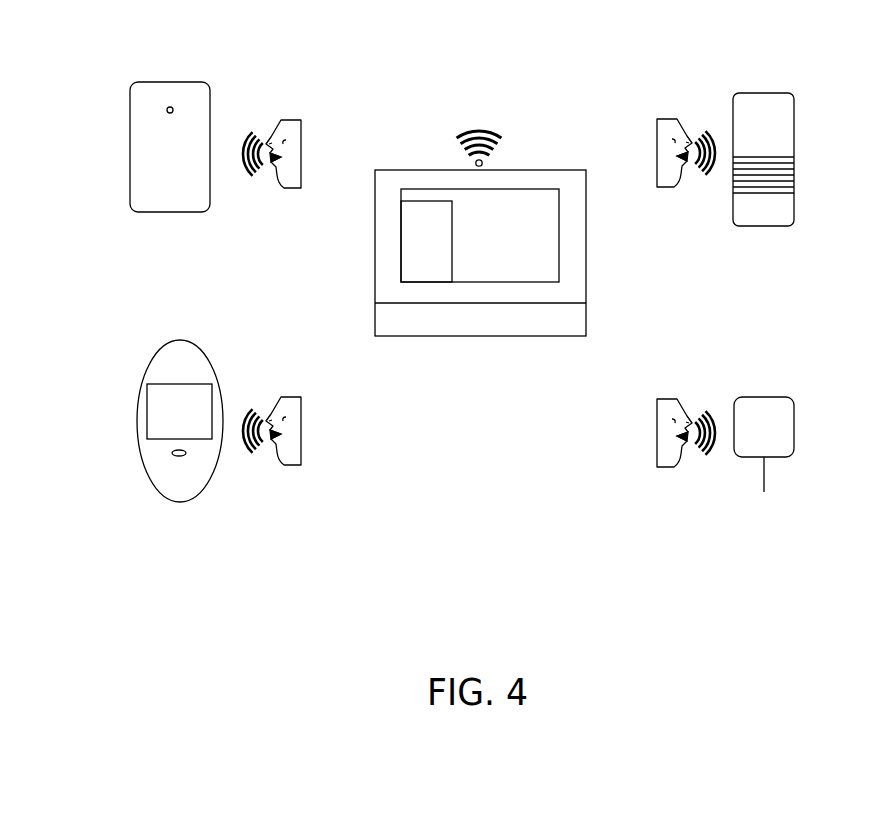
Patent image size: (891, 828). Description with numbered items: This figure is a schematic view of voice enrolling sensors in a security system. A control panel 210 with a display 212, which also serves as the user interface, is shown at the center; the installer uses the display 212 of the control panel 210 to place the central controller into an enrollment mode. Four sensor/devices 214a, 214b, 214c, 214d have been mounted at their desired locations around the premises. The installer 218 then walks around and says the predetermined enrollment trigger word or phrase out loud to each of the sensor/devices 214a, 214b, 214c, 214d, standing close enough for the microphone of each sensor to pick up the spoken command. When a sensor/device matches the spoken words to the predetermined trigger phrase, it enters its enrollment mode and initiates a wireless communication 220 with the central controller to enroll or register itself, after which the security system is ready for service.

The control panel 210 is at (559, 170).
The display 212 is at (551, 248).
The sensor/device 214a is at (765, 93).
The sensor/device 214b is at (764, 397).
The sensor/device 214c is at (180, 340).
The sensor/device 214d is at (170, 82).
The installer 218 is at (293, 120).
The wireless communication 220 is at (482, 123).